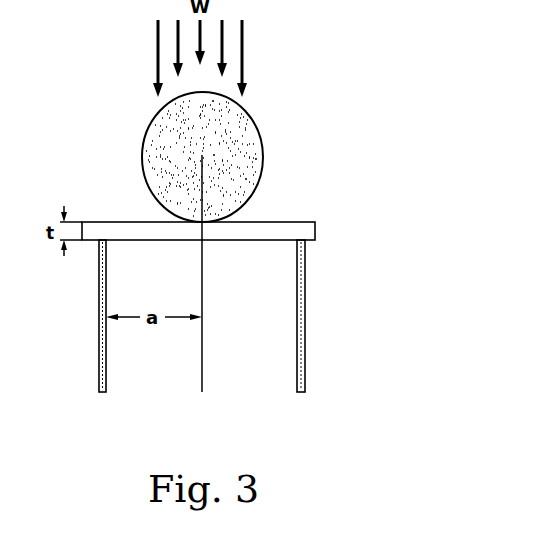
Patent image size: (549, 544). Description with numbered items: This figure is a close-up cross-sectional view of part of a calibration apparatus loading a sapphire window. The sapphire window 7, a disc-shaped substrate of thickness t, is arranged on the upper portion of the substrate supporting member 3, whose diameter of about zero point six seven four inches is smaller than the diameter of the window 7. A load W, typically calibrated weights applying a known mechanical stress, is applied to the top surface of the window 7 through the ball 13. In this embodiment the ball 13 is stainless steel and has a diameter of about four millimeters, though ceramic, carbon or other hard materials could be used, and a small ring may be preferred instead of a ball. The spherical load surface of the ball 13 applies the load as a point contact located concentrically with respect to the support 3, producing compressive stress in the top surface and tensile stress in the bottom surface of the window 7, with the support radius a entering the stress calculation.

The ball 13 is at (253, 133).
The sapphire window 7 is at (313, 225).
The support 3 is at (305, 316).